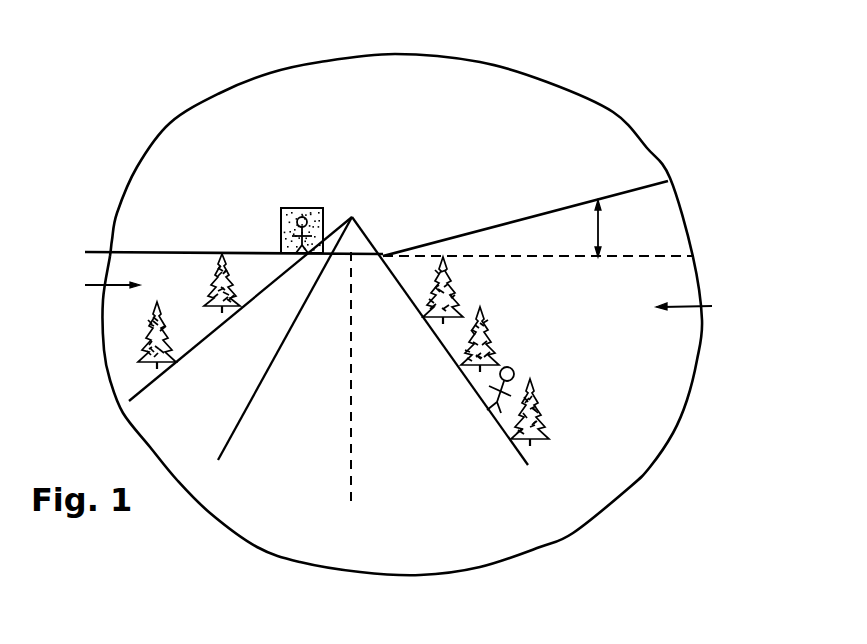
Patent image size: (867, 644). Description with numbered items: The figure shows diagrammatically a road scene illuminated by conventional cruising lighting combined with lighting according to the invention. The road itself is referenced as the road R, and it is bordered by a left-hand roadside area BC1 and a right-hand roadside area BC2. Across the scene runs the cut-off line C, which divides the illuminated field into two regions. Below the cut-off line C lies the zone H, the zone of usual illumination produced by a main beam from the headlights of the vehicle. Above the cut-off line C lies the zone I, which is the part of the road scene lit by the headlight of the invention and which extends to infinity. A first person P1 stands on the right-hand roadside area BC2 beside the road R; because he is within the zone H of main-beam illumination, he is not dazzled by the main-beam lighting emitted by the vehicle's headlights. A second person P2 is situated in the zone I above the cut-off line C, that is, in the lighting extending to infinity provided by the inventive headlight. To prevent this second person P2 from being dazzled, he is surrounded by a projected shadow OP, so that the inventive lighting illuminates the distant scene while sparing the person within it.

The zone of illumination above the cut-off line zone I is at (494, 62).
The zone of usual illumination by a main beam zone H is at (628, 487).
The cut-off line C is at (637, 181).
The left-hand roadside area BC1 is at (85, 285).
The right-hand roadside area BC2 is at (712, 306).
The road R is at (289, 476).
The projected shadow OP is at (282, 207).
The second person P2 is at (308, 209).
The first person P1 is at (514, 368).